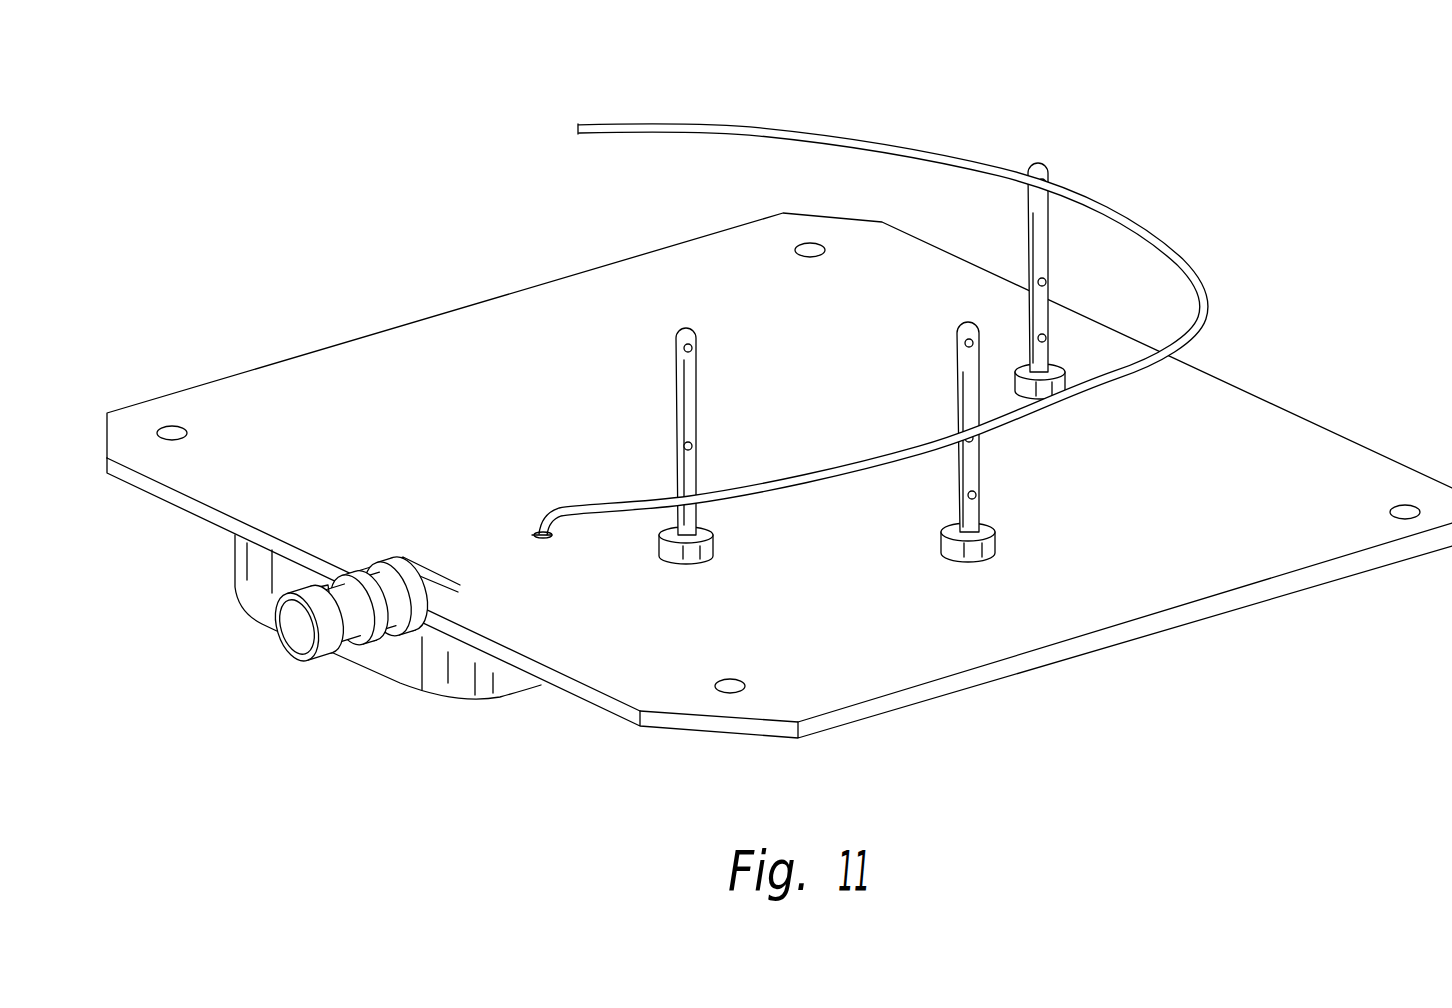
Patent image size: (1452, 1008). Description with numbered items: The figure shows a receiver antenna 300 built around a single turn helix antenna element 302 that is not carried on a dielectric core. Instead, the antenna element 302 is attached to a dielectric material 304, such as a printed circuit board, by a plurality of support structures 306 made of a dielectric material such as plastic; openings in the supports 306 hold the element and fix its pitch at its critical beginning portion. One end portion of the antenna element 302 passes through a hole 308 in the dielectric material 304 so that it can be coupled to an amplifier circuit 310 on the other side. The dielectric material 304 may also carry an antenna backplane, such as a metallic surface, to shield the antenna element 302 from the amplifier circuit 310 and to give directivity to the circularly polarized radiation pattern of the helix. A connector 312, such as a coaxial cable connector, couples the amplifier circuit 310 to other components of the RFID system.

The receiver antenna 300 is at (288, 227).
The single turn helix antenna element 302 is at (808, 137).
The dielectric material 304 is at (872, 643).
The support structures 306 is at (698, 463).
The hole 308 is at (537, 533).
The amplifier circuit 310 is at (412, 672).
The connector 312 is at (280, 640).